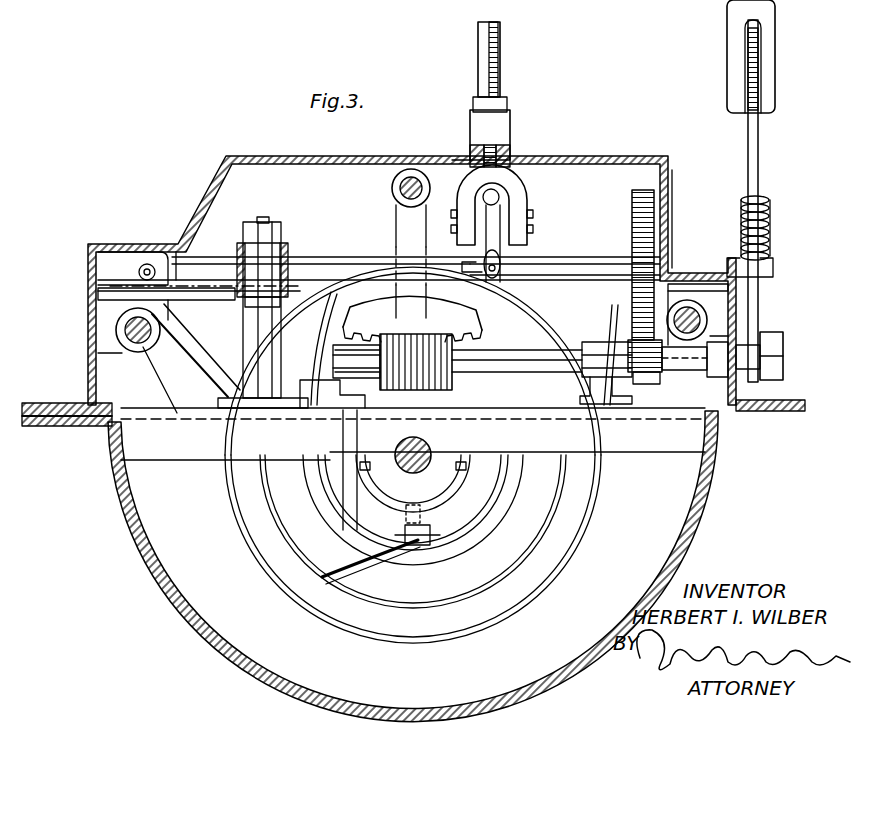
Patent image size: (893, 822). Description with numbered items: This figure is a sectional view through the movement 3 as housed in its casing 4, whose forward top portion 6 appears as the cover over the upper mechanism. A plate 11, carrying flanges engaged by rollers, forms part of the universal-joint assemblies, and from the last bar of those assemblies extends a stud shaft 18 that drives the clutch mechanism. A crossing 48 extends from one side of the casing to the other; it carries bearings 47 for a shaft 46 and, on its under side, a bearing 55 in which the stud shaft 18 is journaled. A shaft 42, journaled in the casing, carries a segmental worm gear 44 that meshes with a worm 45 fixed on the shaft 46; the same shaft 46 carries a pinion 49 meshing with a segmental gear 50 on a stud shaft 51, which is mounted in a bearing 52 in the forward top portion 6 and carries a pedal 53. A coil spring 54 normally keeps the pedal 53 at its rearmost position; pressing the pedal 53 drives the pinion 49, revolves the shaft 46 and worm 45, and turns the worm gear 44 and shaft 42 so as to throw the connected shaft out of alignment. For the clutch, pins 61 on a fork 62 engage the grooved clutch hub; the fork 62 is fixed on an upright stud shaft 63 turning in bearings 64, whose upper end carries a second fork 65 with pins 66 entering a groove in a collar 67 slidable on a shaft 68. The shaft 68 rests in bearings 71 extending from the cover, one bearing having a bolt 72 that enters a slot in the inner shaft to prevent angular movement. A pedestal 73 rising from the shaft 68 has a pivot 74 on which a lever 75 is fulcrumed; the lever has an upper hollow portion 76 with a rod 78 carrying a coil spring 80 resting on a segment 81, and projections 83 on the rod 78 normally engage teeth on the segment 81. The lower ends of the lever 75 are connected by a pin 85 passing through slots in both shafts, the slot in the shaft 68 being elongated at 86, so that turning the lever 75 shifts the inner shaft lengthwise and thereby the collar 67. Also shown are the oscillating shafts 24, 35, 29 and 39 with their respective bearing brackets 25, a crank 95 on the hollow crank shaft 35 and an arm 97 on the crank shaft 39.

The movement 3 is at (413, 566).
The casing 4 is at (128, 519).
The forward top portion 6 is at (606, 156).
The plate 11 is at (493, 283).
The stud shaft 18 is at (432, 454).
The shaft 24 is at (138, 340).
The bearing bracket 25 is at (106, 330).
The shaft 29 is at (700, 329).
The hollow crank shaft 35 is at (146, 341).
The crank shaft 39 is at (706, 320).
The shaft 42 is at (400, 188).
The segmental worm gear 44 is at (400, 216).
The worm 45 is at (345, 330).
The shaft 46 is at (345, 352).
The bearings 47 is at (336, 372).
The crossing 48 is at (210, 460).
The pinion 49 is at (636, 345).
The segmental gear 50 is at (636, 200).
The stud shaft 51 is at (784, 358).
The bearing 52 is at (712, 380).
The pedal 53 is at (760, 182).
The coil spring 54 is at (742, 230).
The bearing 55 is at (440, 492).
The pins 61 is at (418, 542).
The fork 62 is at (368, 508).
The upright stud shaft 63 is at (292, 272).
The bearings 64 is at (248, 348).
The second fork 65 is at (258, 268).
The pins 66 is at (266, 217).
The collar 67 is at (270, 262).
The shaft 68 is at (592, 262).
The bearings 71 is at (177, 262).
The bolt 72 is at (145, 263).
The pedestal 73 is at (463, 218).
The pivot 74 is at (498, 195).
The lever 75 is at (511, 130).
The upper hollow portion 76 is at (488, 44).
The rod 78 is at (478, 154).
The coil spring 80 is at (502, 152).
The segment 81 is at (531, 206).
The projections 83 is at (466, 158).
The pin 85 is at (500, 268).
The elongated slot 86 is at (472, 258).
The crank 95 is at (200, 420).
The arm 97 is at (611, 320).